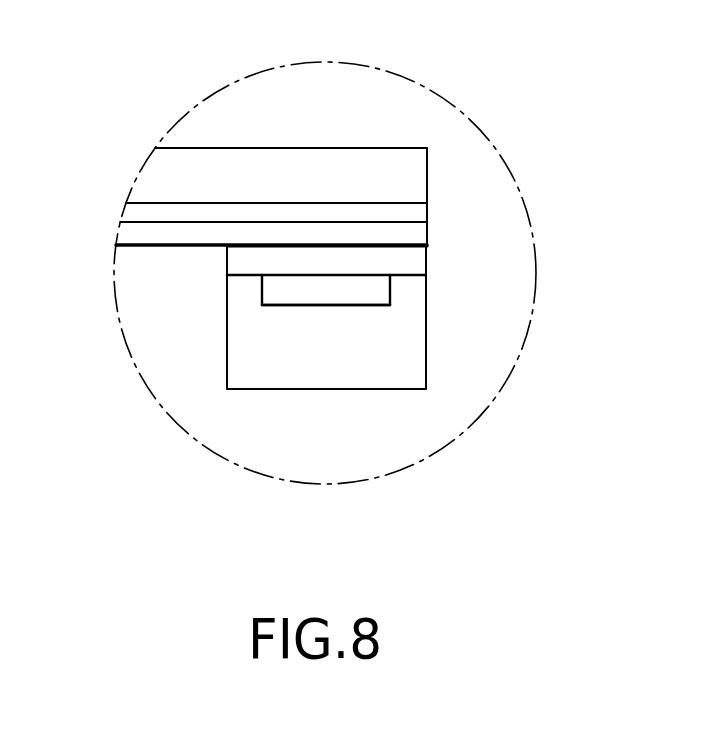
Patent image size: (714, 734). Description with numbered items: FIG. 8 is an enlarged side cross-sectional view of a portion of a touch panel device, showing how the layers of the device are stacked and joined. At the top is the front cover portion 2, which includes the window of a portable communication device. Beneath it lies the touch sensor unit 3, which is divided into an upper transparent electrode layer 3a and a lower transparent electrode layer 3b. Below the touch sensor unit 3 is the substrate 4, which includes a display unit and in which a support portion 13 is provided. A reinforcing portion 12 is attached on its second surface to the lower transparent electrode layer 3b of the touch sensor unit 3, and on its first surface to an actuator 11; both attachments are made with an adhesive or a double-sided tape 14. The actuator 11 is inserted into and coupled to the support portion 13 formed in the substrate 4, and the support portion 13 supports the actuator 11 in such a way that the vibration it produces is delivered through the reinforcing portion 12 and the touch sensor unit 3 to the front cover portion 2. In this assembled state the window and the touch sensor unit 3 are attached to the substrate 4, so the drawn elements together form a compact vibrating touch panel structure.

The front cover portion 2 is at (287, 163).
The touch sensor unit 3 is at (379, 207).
The upper transparent electrode layer 3a is at (412, 215).
The lower transparent electrode layer 3b is at (418, 235).
The substrate 4 is at (410, 352).
The actuator 11 is at (272, 292).
The reinforcing portion 12 is at (418, 258).
The support portion 13 is at (325, 306).
The double-sided tape 14 is at (238, 247).